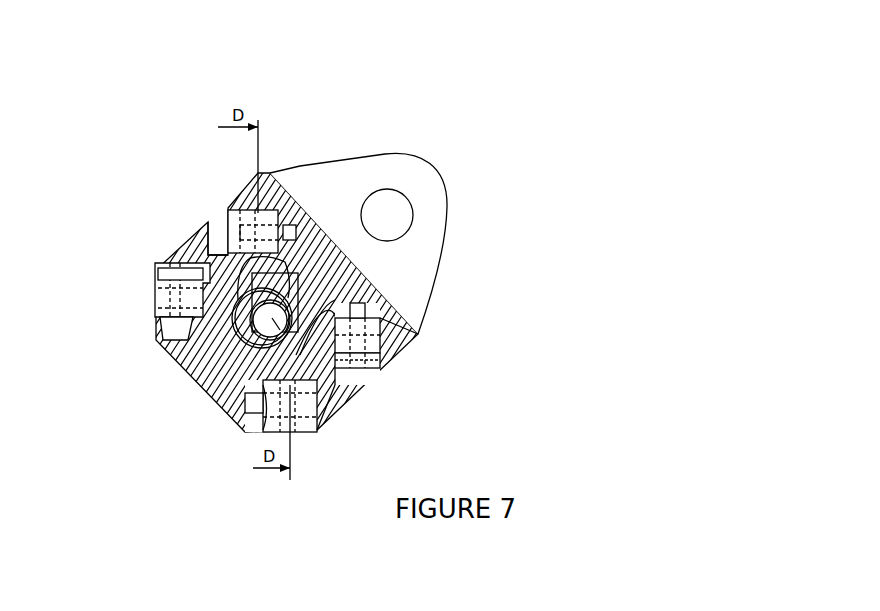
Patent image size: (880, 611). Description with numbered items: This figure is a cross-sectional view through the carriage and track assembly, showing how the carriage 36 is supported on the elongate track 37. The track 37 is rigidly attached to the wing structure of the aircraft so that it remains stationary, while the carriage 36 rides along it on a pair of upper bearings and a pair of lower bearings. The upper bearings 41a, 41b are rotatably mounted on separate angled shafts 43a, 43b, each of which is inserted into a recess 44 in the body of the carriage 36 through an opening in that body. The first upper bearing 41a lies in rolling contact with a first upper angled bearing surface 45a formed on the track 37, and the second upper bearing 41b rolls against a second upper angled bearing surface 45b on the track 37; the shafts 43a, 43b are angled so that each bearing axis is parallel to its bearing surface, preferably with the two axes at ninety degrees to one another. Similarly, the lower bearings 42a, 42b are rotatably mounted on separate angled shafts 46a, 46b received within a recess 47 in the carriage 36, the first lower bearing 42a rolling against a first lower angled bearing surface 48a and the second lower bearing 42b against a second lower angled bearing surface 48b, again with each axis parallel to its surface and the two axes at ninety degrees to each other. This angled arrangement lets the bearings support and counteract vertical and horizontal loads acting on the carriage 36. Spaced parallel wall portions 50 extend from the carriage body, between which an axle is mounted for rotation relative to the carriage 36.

The carriage 36 is at (128, 209).
The track 37 is at (182, 389).
The first upper bearing 41a is at (176, 292).
The second upper bearing 41b is at (274, 210).
The first lower bearing 42a is at (292, 398).
The second lower bearing 42b is at (373, 340).
The angled shaft 43a is at (190, 335).
The angled shaft 43b is at (292, 235).
The recess 44 is at (188, 252).
The first upper angled bearing surface 45a is at (160, 283).
The second upper angled bearing surface 45b is at (256, 250).
The angled shaft 46a is at (245, 398).
The angled shaft 46b is at (383, 293).
The recess 47 is at (350, 388).
The first lower angled bearing surface 48a is at (282, 400).
The second lower angled bearing surface 48b is at (420, 335).
The wall portion 50 is at (432, 239).